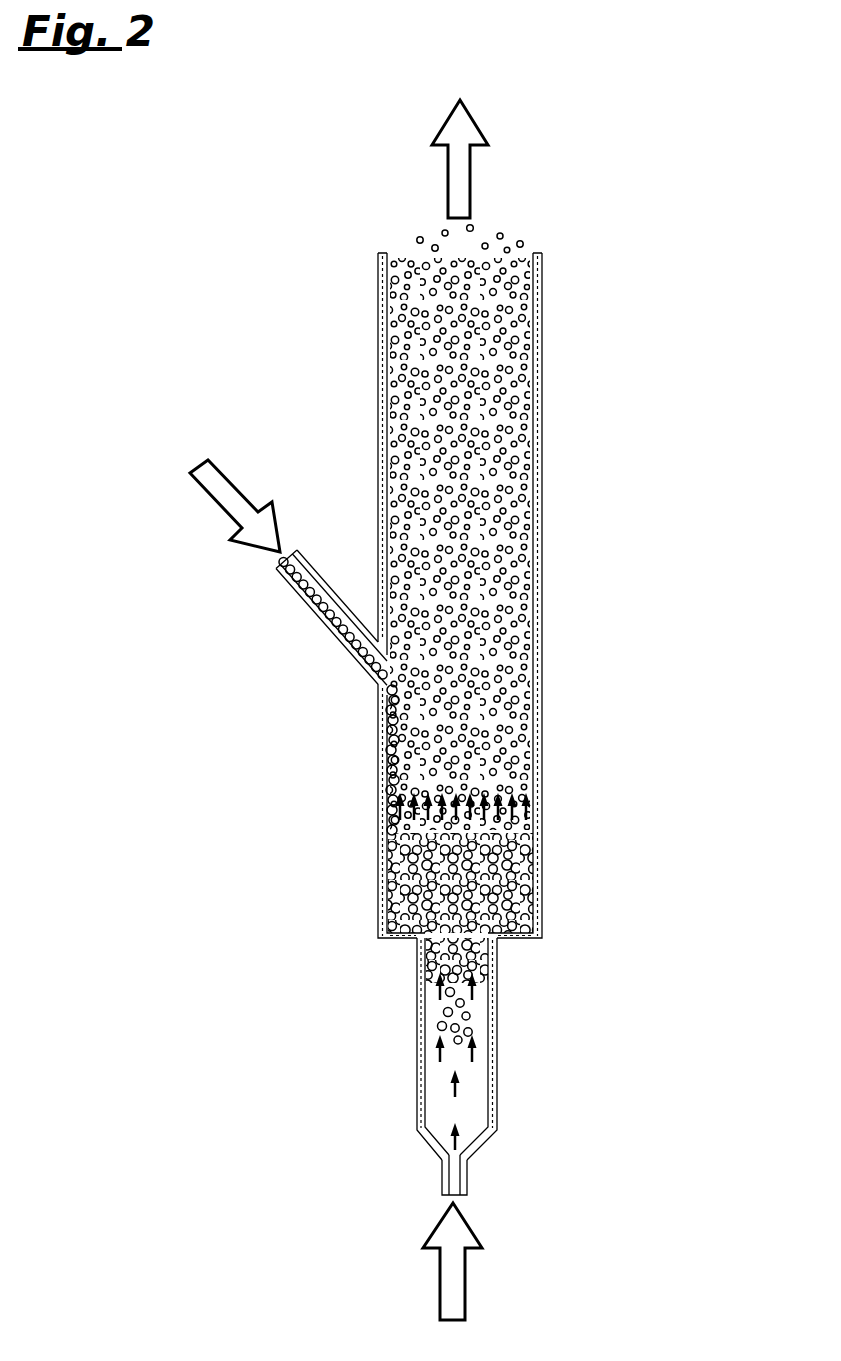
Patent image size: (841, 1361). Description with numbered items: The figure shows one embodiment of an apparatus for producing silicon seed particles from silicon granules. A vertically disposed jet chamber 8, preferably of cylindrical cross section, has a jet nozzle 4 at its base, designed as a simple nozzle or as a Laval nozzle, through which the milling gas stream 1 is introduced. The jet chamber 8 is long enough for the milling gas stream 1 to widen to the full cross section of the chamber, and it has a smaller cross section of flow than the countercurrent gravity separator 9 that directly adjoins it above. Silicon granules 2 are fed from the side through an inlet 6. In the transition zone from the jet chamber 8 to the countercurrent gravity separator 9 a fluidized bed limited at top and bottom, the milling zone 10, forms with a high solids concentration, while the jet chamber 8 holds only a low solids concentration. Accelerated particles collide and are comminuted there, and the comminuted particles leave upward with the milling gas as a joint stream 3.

The milling gas stream 1 is at (452, 1285).
The silicon granules 2 is at (218, 490).
The joint stream 3 is at (460, 188).
The jet nozzle 4 is at (457, 1178).
The inlet 6 is at (316, 622).
The jet chamber 8 is at (478, 1072).
The countercurrent gravity separator 9 is at (542, 660).
The milling zone 10 is at (533, 862).